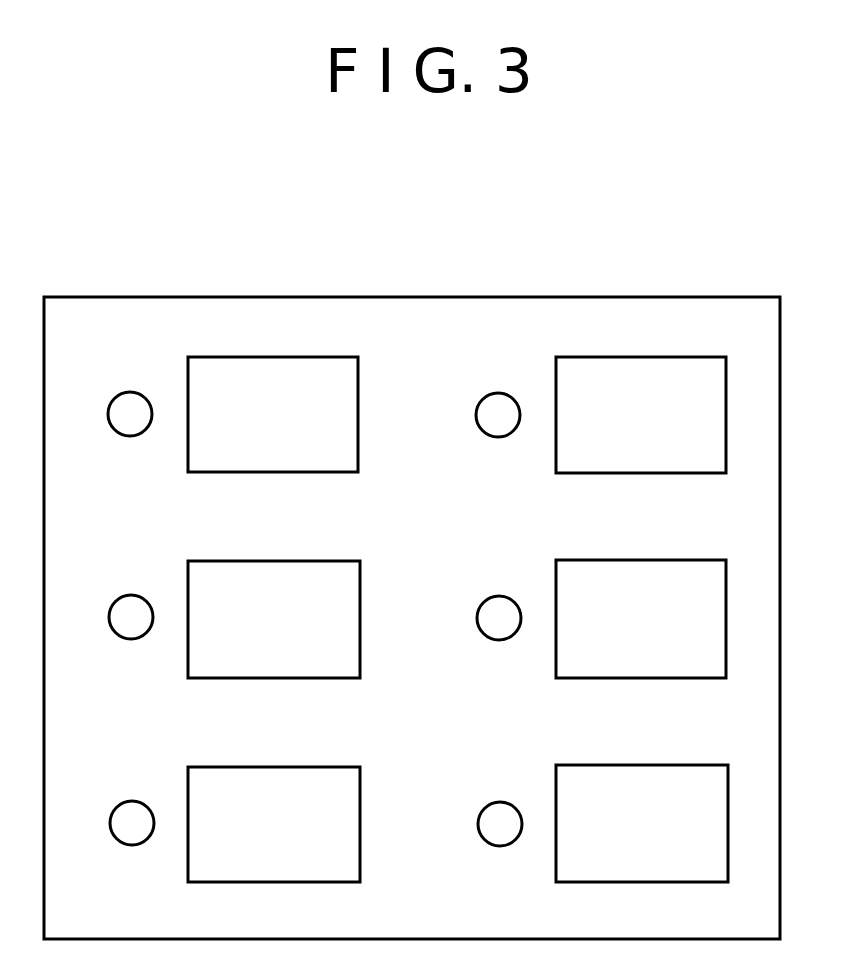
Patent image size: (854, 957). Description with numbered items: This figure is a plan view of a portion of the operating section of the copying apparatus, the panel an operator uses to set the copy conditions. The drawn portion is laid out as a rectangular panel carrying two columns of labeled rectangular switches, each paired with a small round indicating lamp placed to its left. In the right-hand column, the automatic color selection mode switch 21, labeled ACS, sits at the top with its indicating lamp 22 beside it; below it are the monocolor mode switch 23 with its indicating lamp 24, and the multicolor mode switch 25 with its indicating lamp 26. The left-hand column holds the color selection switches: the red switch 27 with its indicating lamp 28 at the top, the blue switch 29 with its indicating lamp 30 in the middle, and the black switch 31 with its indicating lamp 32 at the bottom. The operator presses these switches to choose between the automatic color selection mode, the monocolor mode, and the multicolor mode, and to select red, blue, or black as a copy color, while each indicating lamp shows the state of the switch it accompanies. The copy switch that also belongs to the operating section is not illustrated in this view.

The automatic color selection mode switch 21 is at (677, 366).
The indicating lamp 22 is at (495, 403).
The monocolor mode switch 23 is at (692, 567).
The indicating lamp 24 is at (498, 598).
The multicolor mode switch 25 is at (660, 780).
The indicating lamp 26 is at (492, 803).
The red switch 27 is at (317, 368).
The indicating lamp 28 is at (127, 402).
The blue switch 29 is at (332, 567).
The indicating lamp 30 is at (123, 607).
The black switch 31 is at (328, 778).
The indicating lamp 32 is at (127, 808).